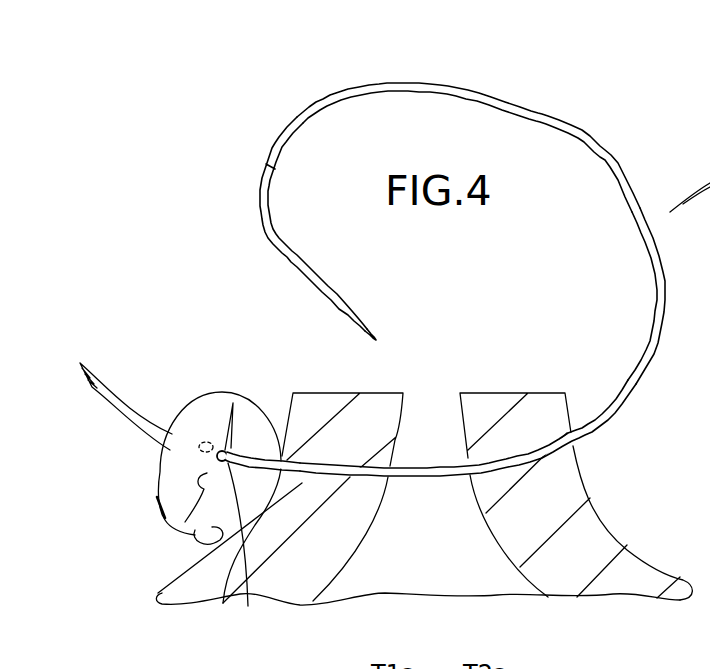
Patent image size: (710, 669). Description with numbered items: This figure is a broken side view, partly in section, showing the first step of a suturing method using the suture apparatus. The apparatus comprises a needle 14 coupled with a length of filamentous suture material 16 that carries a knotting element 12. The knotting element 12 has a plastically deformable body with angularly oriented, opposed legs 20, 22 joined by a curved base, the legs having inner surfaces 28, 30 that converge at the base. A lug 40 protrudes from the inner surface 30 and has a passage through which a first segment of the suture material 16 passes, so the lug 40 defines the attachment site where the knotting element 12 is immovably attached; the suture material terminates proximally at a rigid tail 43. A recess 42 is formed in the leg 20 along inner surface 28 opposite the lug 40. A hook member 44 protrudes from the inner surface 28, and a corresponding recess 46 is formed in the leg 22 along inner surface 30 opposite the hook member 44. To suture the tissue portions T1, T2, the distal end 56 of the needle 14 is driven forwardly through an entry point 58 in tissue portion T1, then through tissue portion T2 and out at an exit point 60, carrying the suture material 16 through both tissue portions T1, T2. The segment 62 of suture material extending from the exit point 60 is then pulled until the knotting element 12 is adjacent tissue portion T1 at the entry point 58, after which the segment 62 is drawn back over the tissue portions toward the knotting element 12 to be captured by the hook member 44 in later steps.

The knotting element 12 is at (198, 408).
The needle 14 is at (292, 253).
The length of filamentous suture material 16 is at (578, 135).
The leg 20 is at (168, 495).
The leg 22 is at (248, 606).
The inner surface 28 is at (182, 524).
The inner surface 30 is at (222, 604).
The lug 40 is at (226, 446).
The recess 42 is at (208, 449).
The rigid tail 43 is at (98, 382).
The hook member 44 is at (193, 524).
The recess 46 is at (230, 485).
The distal end 56 is at (377, 339).
The entry point 58 is at (277, 460).
The exit point 60 is at (575, 447).
The segment of suture material 62 is at (658, 345).
The tissue portion T1 is at (363, 403).
The tissue portion T2 is at (512, 400).